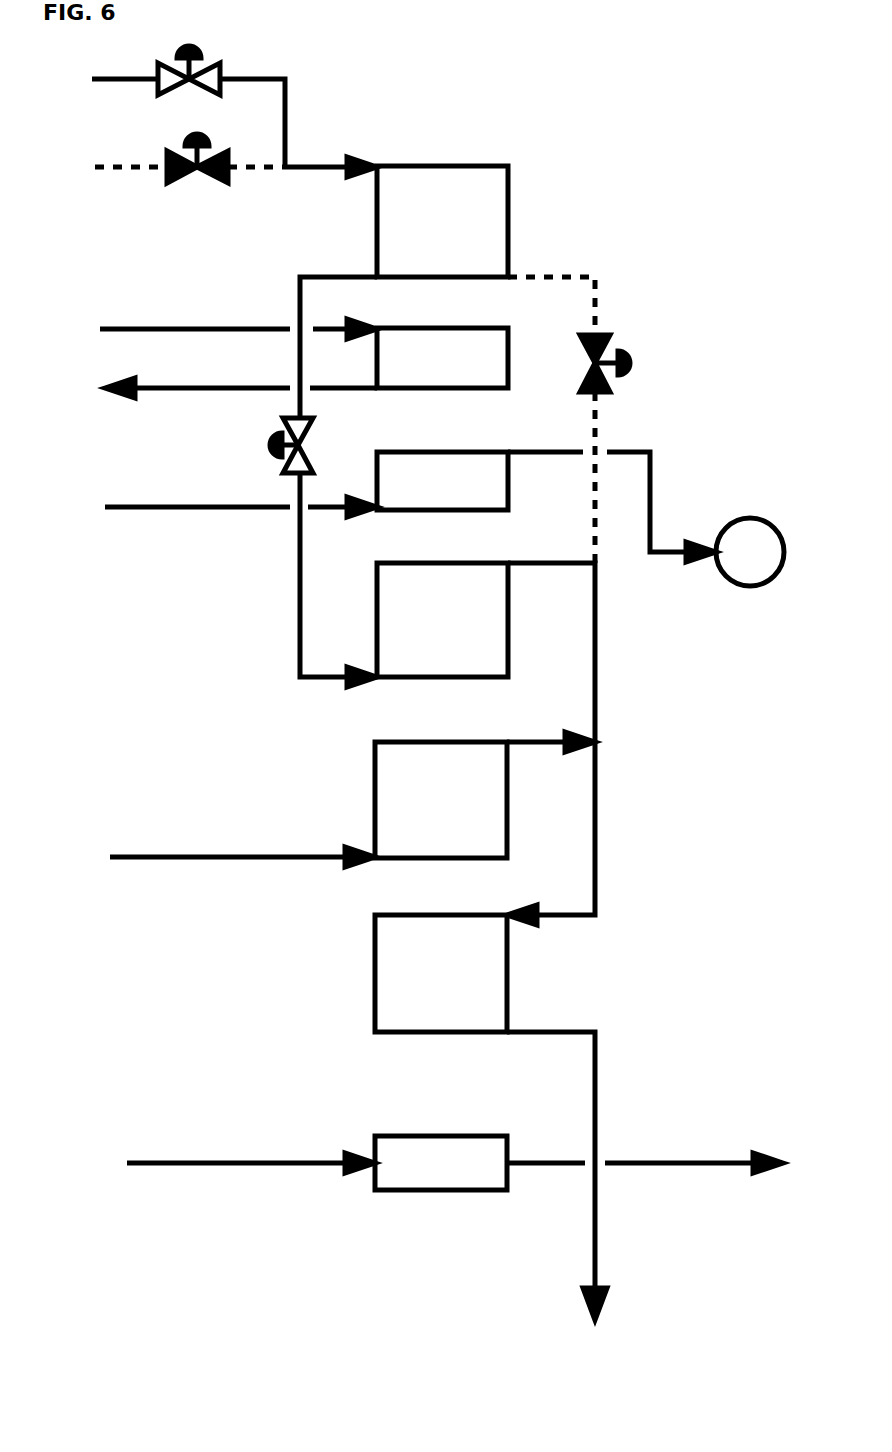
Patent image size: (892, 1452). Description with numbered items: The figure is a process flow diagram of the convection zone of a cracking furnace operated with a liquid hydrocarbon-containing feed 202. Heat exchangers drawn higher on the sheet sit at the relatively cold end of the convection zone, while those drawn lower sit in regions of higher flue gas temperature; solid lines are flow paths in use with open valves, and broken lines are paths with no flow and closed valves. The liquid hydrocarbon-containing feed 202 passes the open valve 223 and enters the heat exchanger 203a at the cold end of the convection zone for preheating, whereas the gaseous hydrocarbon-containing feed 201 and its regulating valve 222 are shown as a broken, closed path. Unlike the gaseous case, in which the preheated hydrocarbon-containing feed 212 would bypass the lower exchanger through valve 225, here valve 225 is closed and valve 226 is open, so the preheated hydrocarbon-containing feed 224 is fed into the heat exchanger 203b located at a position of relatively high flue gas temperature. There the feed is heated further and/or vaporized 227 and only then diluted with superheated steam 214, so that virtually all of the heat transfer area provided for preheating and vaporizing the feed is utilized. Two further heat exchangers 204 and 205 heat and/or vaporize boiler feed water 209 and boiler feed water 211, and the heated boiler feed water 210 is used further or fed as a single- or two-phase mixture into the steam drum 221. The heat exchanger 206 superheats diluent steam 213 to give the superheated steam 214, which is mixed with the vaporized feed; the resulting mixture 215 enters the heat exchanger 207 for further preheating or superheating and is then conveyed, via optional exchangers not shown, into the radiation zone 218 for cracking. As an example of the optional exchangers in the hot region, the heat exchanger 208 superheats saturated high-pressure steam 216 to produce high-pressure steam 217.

The gaseous hydrocarbon-containing feed 201 is at (212, 168).
The liquid hydrocarbon-containing feed 202 is at (166, 116).
The heat exchanger 203a is at (442, 221).
The heat exchanger 203b is at (442, 620).
The heat exchanger 204 is at (442, 358).
The heat exchanger 205 is at (442, 481).
The heat exchanger 206 is at (441, 800).
The heat exchanger 207 is at (441, 973).
The heat exchanger 208 is at (441, 1163).
The boiler feed water 209 is at (213, 330).
The heated boiler feed water 210 is at (213, 389).
The boiler feed water 211 is at (216, 508).
The preheated hydrocarbon-containing feed 212 is at (551, 292).
The diluent steam 213 is at (217, 858).
The superheated steam 214 is at (551, 733).
The mixture 215 is at (546, 907).
The saturated high-pressure steam 216 is at (226, 1164).
The high-pressure steam 217 is at (669, 1164).
The radiation zone 218 is at (561, 1192).
The steam drum 221 is at (646, 519).
The regulating valve 222 is at (197, 174).
The valve 223 is at (189, 85).
The preheated hydrocarbon-containing feed 224 is at (311, 482).
The valve 225 is at (634, 449).
The valve 226 is at (262, 445).
The further heated and/or vaporized hydrocarbon-containing feed 227 is at (551, 726).